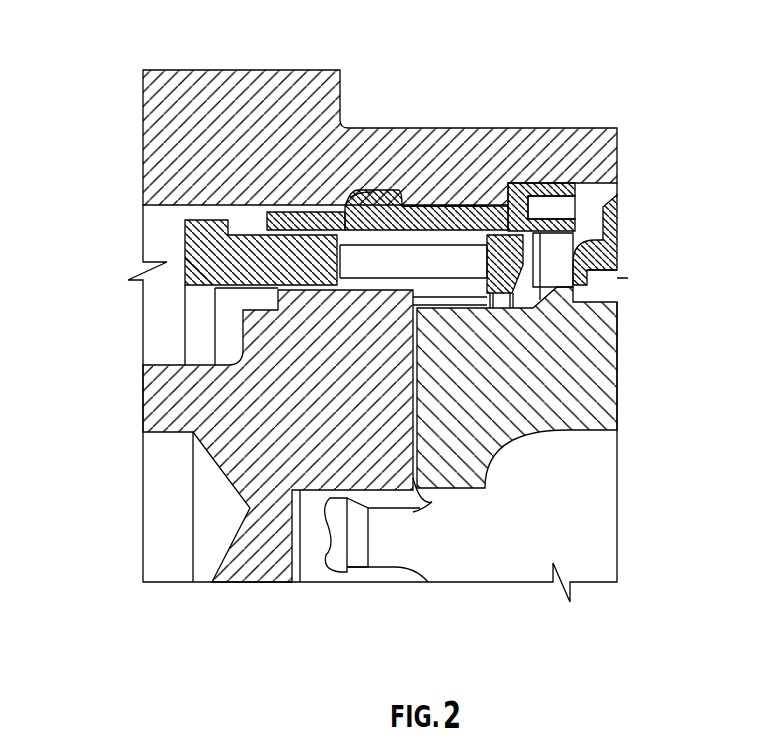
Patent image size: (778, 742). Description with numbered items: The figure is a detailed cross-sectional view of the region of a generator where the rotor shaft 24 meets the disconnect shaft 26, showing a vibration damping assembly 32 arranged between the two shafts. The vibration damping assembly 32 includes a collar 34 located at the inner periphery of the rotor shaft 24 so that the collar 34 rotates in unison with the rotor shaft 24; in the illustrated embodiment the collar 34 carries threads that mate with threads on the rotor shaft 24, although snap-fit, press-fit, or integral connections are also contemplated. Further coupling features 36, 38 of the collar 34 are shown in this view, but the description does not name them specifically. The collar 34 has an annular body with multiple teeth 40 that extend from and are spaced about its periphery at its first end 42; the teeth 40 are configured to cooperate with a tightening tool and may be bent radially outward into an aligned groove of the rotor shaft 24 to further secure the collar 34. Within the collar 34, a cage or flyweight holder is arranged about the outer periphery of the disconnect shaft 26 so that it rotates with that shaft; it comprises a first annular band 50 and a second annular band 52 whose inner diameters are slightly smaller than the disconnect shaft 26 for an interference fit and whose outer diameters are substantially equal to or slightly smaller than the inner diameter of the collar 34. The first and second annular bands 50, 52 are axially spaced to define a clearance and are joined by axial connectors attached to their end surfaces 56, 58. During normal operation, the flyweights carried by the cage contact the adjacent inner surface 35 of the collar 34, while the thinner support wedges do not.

The rotor shaft 24 is at (183, 147).
The disconnect shaft 26 is at (167, 392).
The vibration damping assembly 32 is at (606, 241).
The collar 34 is at (470, 207).
The inner surface 35 is at (376, 207).
The seal element 36 is at (432, 208).
The seal plate 38 is at (405, 212).
The teeth 40 is at (560, 183).
The first end 42 is at (568, 220).
The first annular band 50 is at (262, 266).
The second annular band 52 is at (505, 265).
The end surface 56 is at (343, 262).
The end surface 58 is at (468, 268).